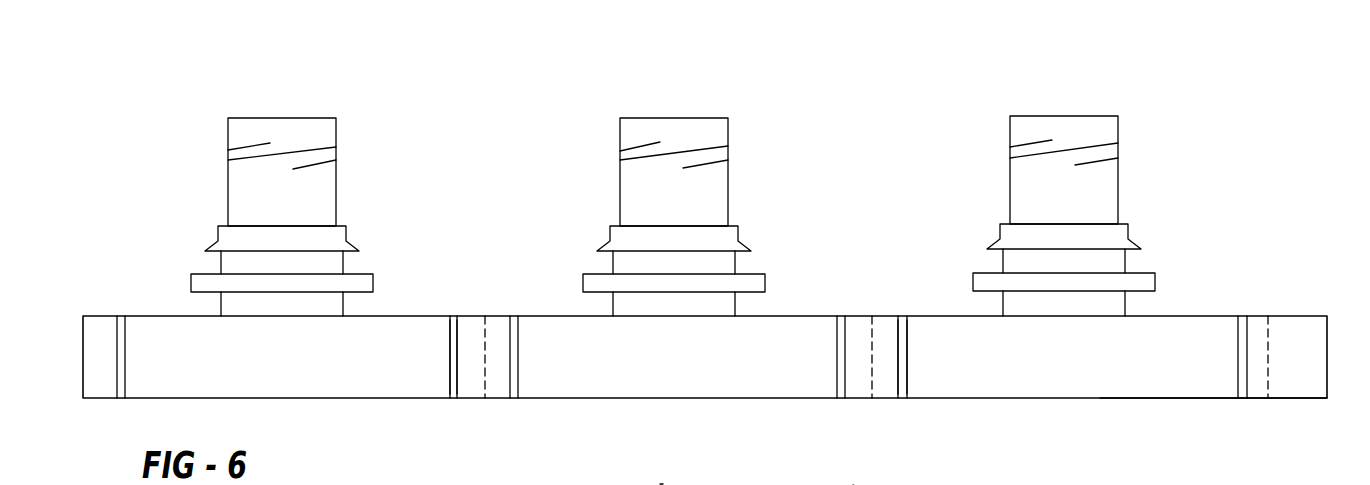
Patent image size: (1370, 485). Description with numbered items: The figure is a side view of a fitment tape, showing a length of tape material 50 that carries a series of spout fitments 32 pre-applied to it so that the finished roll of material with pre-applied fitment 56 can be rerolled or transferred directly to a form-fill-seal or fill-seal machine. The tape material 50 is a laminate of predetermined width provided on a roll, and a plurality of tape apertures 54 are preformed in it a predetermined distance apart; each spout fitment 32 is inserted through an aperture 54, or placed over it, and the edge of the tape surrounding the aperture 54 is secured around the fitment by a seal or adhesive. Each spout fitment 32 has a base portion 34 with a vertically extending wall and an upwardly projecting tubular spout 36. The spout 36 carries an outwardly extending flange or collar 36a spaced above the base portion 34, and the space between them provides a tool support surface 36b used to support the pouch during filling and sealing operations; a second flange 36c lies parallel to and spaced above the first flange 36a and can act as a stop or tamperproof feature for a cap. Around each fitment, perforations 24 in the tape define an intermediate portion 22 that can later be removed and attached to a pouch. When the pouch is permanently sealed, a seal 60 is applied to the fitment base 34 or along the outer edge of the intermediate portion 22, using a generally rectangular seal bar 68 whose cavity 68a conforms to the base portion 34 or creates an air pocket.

The intermediate portion 22 is at (468, 400).
The perforations 24 is at (485, 345).
The spout fitment 32 is at (1118, 183).
The base portion 34 is at (1206, 375).
The spout 36 is at (1040, 237).
The flange 36a is at (983, 282).
The tool support surface 36b is at (1110, 302).
The second flange 36c is at (1013, 236).
The tape material 50 is at (1293, 398).
The tape aperture 54 is at (903, 363).
The roll of material with pre-applied fitment 56 is at (1040, 180).
The seal 60 is at (447, 345).
The seal bar 68 is at (853, 484).
The cavity 68a is at (649, 478).